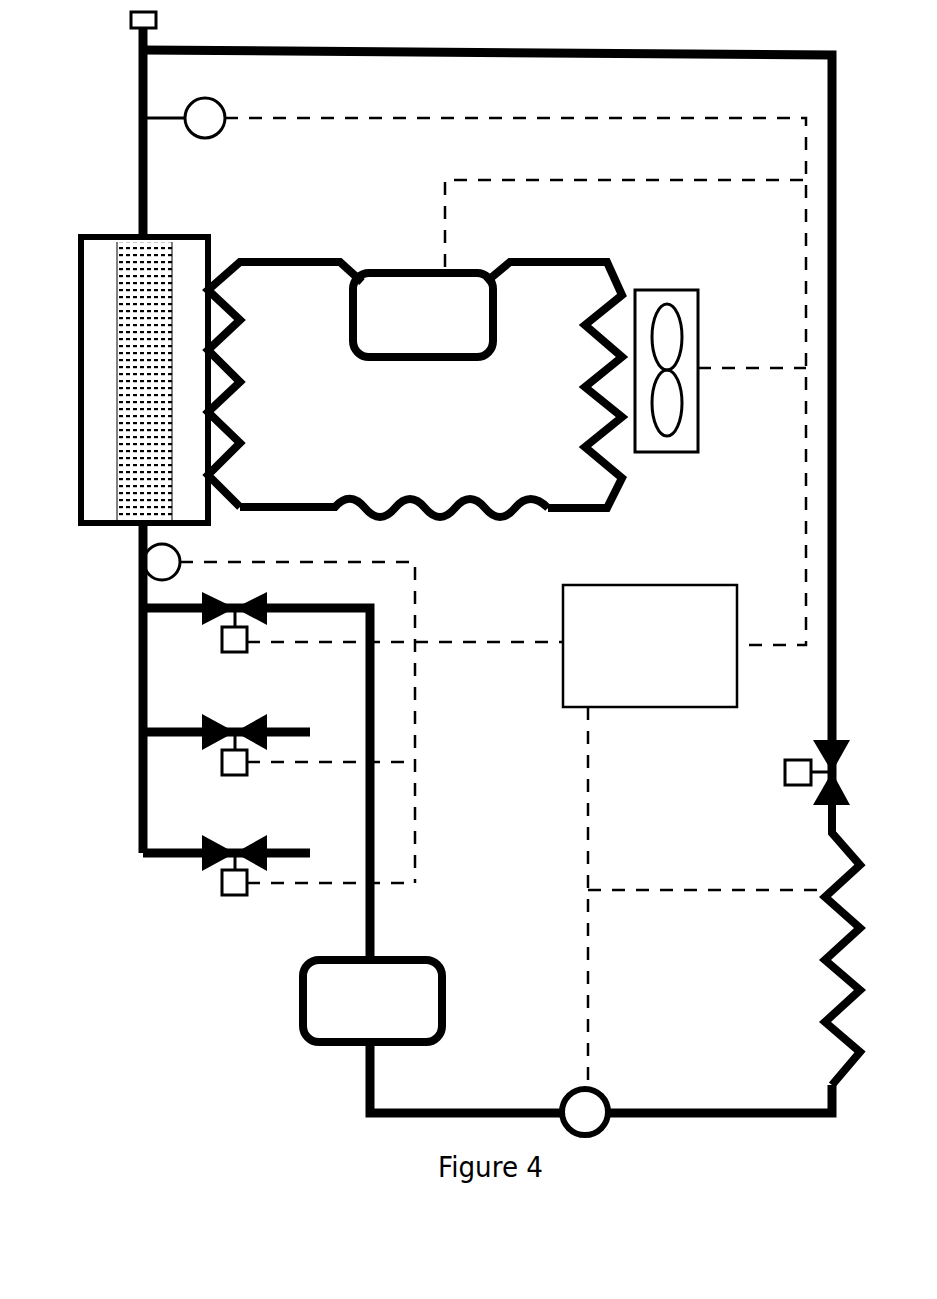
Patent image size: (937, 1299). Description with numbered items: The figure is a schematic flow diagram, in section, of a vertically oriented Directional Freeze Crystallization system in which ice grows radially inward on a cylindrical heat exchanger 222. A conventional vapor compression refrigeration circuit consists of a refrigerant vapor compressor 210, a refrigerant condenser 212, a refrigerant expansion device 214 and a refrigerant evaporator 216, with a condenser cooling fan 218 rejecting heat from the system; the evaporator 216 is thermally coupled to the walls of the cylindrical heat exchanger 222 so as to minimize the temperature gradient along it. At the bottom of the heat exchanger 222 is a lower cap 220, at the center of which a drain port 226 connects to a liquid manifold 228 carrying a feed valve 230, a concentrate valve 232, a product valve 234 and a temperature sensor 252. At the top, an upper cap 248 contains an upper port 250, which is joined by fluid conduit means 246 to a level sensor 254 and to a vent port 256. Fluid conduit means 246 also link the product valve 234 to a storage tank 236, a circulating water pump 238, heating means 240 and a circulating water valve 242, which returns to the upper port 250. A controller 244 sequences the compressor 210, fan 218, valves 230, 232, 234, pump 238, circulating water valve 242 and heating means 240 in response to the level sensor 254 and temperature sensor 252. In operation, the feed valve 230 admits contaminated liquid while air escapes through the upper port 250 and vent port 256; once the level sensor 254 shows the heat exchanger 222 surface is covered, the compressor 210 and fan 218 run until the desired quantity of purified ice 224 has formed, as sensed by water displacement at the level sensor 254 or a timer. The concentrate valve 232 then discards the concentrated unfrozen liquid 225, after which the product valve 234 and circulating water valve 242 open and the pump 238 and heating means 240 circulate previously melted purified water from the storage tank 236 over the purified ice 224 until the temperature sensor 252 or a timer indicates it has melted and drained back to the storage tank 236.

The refrigerant vapor compressor 210 is at (418, 275).
The refrigerant condenser 212 is at (608, 412).
The refrigerant expansion device 214 is at (465, 499).
The refrigerant evaporator 216 is at (232, 370).
The condenser cooling fan 218 is at (678, 452).
The lower cap 220 is at (100, 525).
The cylindrical heat exchanger 222 is at (82, 462).
The purified ice 224 is at (188, 382).
The concentrated unfrozen liquid 225 is at (143, 442).
The drain port 226 is at (138, 525).
The liquid manifold 228 is at (140, 635).
The feed valve 230 is at (263, 843).
The concentrate valve 232 is at (265, 713).
The product valve 234 is at (263, 592).
The storage tank 236 is at (303, 990).
The circulating water pump 238 is at (575, 1085).
The heating means 240 is at (837, 913).
The circulating water valve 242 is at (823, 803).
The controller 244 is at (732, 707).
The fluid conduit means 246 is at (832, 68).
The upper cap 248 is at (132, 240).
The upper port 250 is at (145, 240).
The temperature sensor 252 is at (182, 553).
The level sensor 254 is at (220, 105).
The vent port 256 is at (132, 20).